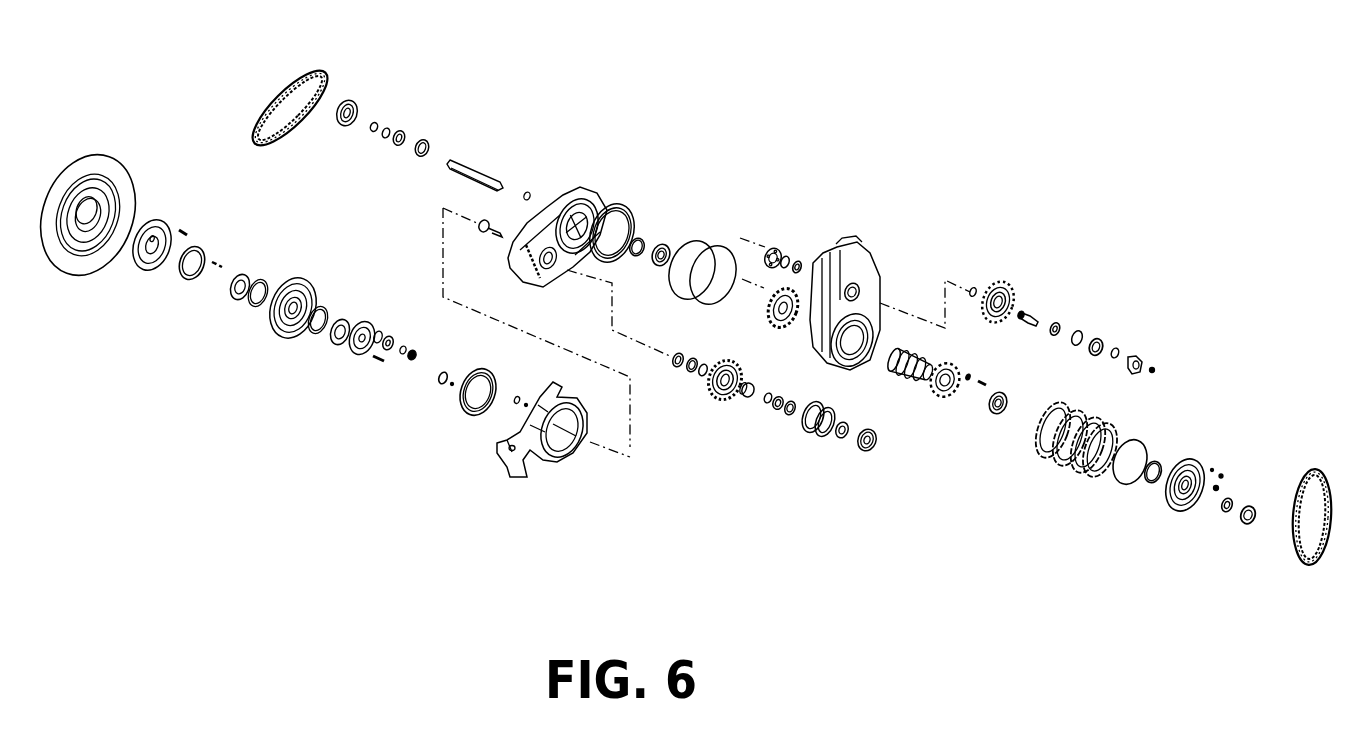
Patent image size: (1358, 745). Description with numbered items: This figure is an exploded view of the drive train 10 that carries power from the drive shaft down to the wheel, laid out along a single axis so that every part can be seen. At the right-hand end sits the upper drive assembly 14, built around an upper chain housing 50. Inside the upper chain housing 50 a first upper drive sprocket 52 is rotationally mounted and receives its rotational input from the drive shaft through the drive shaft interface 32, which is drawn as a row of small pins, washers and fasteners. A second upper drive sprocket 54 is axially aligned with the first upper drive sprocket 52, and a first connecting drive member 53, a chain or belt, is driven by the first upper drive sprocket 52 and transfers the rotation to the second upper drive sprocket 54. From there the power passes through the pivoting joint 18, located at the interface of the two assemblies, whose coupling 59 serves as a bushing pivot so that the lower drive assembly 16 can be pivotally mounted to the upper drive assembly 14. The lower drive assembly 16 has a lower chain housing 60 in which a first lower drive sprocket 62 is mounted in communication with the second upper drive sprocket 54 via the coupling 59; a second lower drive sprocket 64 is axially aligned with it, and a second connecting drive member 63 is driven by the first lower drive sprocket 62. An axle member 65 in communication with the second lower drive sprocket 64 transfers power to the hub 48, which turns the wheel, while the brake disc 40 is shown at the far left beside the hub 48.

The gearbox assembly 10 is at (841, 184).
The upper drive assembly 14 is at (908, 280).
The lower drive assembly 16 is at (624, 184).
The pivoting joint 18 is at (729, 222).
The drive shaft interface 32 is at (1084, 315).
The brake disc 40 is at (66, 170).
The hub 48 is at (104, 298).
The upper chain housing 50 is at (878, 266).
The first upper drive sprocket 52 is at (1003, 283).
The first connecting drive member 53 is at (1310, 469).
The second upper drive sprocket 54 is at (955, 397).
The coupling 59 is at (918, 390).
The lower chain housing 60 is at (568, 184).
The first lower drive sprocket 62 is at (790, 324).
The second connecting drive member 63 is at (308, 74).
The second lower drive sprocket 64 is at (733, 400).
The axle member 65 is at (497, 241).